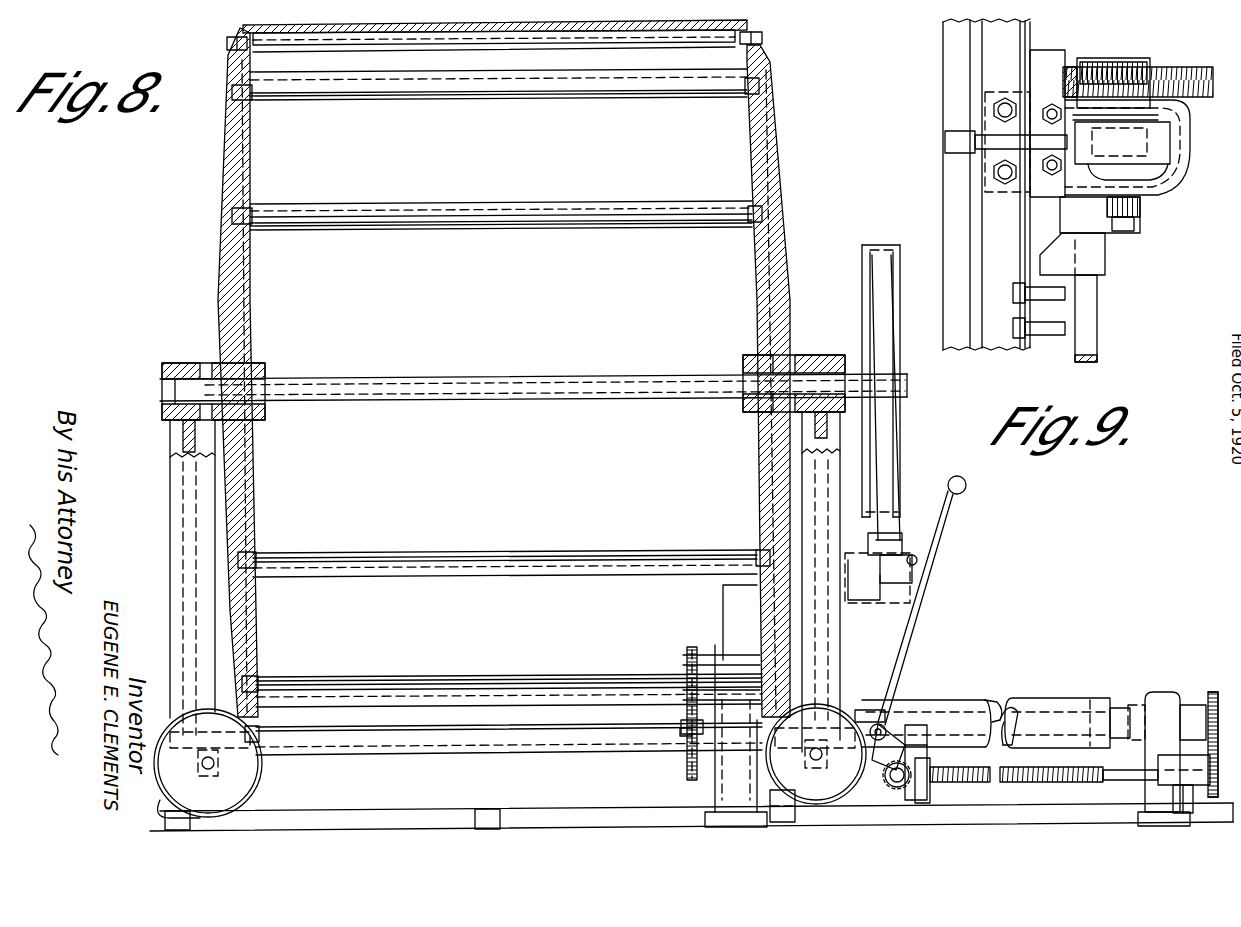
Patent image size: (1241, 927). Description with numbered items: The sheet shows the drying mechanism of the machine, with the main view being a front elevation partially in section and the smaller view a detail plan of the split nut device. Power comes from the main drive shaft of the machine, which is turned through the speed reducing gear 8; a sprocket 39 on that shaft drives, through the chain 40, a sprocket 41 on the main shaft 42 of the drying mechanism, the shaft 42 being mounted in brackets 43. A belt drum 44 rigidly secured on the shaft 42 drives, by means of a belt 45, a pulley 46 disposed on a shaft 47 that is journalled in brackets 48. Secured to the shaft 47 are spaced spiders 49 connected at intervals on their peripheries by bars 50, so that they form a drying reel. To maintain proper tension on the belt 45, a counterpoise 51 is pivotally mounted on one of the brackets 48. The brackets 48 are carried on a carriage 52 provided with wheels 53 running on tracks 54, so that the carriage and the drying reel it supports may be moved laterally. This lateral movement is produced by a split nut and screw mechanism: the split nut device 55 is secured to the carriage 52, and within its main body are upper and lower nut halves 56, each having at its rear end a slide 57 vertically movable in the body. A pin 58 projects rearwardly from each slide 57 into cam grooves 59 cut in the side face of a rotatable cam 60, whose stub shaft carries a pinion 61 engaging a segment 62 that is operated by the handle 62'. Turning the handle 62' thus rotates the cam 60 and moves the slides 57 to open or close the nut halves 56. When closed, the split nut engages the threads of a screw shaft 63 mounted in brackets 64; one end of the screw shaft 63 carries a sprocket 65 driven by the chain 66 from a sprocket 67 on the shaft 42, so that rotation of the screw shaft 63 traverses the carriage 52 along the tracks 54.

In FIG. 8, the speed reducing gear 8 is at (723, 604).
In FIG. 8, the sprocket 39 is at (687, 670).
In FIG. 8, the chain 40 is at (687, 770).
In FIG. 8, the sprocket 41 is at (680, 730).
In FIG. 8, the main shaft 42 is at (1003, 712).
In FIG. 8, the brackets 43 is at (715, 795).
In FIG. 8, the belt drum 44 is at (1078, 698).
In FIG. 8, the belt 45 is at (890, 462).
In FIG. 8, the pulley 46 is at (866, 278).
In FIG. 8, the shaft 47 is at (550, 375).
In FIG. 8, the brackets 48 is at (172, 500).
In FIG. 9, the brackets 48 is at (975, 345).
In FIG. 8, the spiders 49 is at (218, 268).
In FIG. 8, the bars 50 is at (600, 72).
In FIG. 8, the counterpoise 51 is at (902, 545).
In FIG. 8, the carriage 52 is at (494, 747).
In FIG. 9, the carriage 52 is at (1031, 36).
In FIG. 8, the wheels 53 is at (262, 778).
In FIG. 8, the tracks 54 is at (444, 812).
In FIG. 8, the split nut device 55 is at (927, 762).
In FIG. 9, the split nut device 55 is at (1160, 190).
In FIG. 9, the nut halves 56 is at (1115, 60).
In FIG. 9, the slide 57 is at (1160, 116).
In FIG. 9, the pin 58 is at (1170, 135).
In FIG. 9, the cam grooves 59 is at (1170, 155).
In FIG. 9, the cam 60 is at (1168, 178).
In FIG. 8, the pinion 61 is at (912, 785).
In FIG. 9, the pinion 61 is at (1142, 212).
In FIG. 8, the segment 62 is at (909, 740).
In FIG. 9, the segment 62 is at (1081, 279).
In FIG. 8, the handle 62' is at (925, 600).
In FIG. 8, the screw shaft 63 is at (1072, 783).
In FIG. 9, the screw shaft 63 is at (1165, 66).
In FIG. 8, the brackets 64 is at (770, 800).
In FIG. 8, the sprocket 65 is at (1205, 756).
In FIG. 8, the chain 66 is at (1218, 694).
In FIG. 8, the sprocket 67 is at (1208, 700).